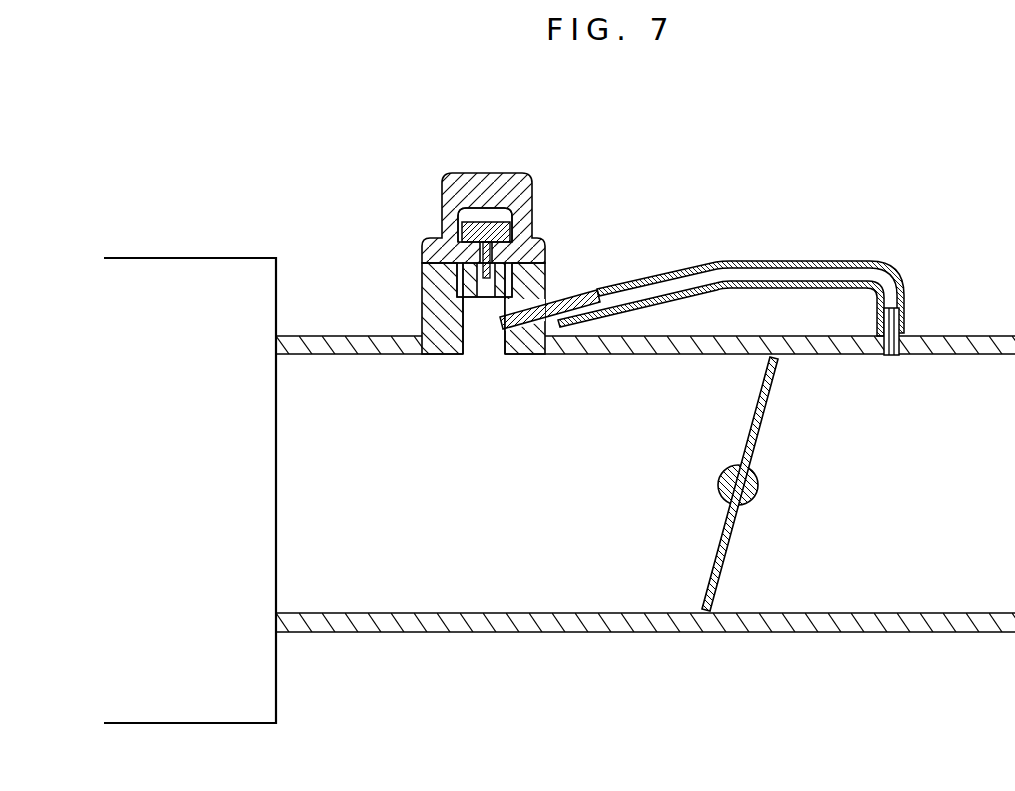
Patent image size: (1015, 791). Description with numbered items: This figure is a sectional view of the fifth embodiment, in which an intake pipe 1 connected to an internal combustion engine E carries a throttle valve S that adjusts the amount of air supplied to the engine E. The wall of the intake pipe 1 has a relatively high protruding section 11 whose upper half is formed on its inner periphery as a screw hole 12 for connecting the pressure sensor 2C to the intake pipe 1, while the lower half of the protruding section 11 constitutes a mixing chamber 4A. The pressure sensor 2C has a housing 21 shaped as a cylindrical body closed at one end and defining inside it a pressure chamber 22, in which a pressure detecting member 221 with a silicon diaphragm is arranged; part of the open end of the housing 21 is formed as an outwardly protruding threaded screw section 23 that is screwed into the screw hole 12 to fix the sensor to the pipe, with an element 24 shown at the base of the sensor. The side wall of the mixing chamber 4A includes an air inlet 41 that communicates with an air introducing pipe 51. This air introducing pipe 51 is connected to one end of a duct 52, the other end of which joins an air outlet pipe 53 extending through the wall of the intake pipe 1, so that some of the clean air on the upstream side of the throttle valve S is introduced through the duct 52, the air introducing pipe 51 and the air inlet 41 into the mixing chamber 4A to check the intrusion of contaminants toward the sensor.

The internal combustion engine E is at (277, 688).
The intake pipe 1 is at (513, 628).
The throttle valve S is at (717, 582).
The protruding section 11 is at (428, 305).
The screw hole 12 is at (467, 340).
The air inlet 41 is at (497, 338).
The mixing chamber 4A is at (483, 345).
The pressure sensor 2C is at (489, 202).
The housing 21 is at (504, 173).
The pressure chamber 22 is at (465, 212).
The pressure detecting member 221 is at (508, 212).
The valve seat 24 is at (482, 290).
The screw section 23 is at (520, 278).
The air introducing pipe 51 is at (551, 297).
The duct 52 is at (736, 288).
The air outlet pipe 53 is at (905, 318).